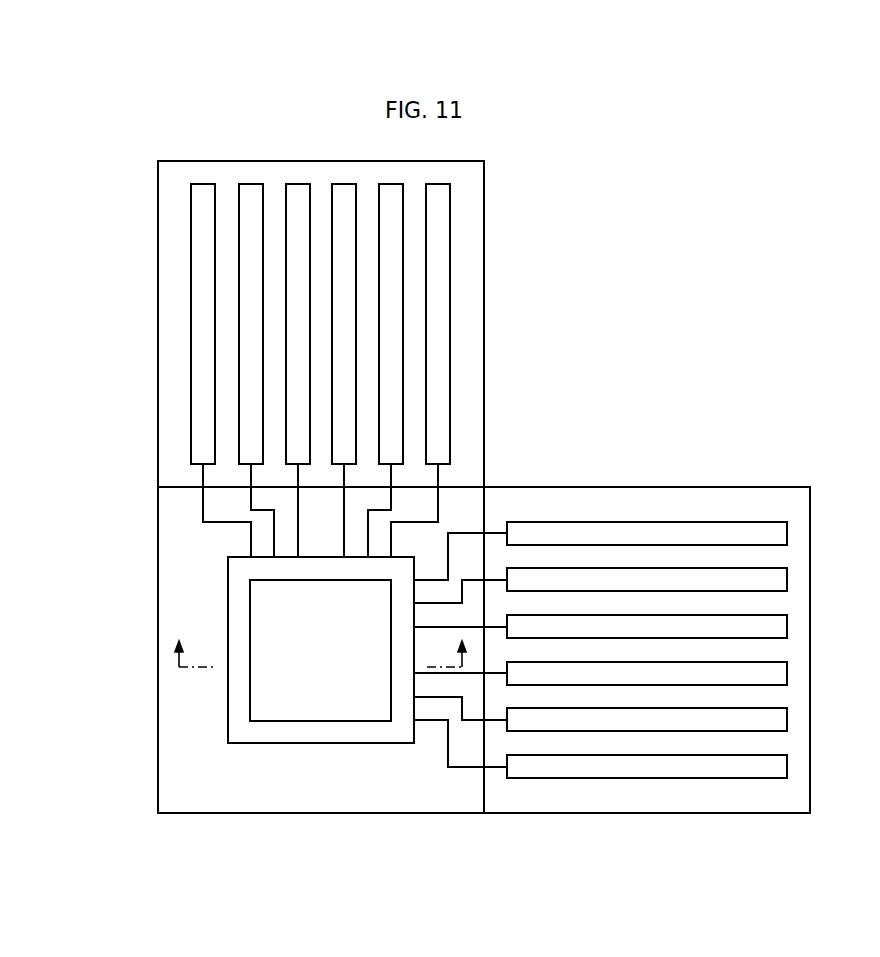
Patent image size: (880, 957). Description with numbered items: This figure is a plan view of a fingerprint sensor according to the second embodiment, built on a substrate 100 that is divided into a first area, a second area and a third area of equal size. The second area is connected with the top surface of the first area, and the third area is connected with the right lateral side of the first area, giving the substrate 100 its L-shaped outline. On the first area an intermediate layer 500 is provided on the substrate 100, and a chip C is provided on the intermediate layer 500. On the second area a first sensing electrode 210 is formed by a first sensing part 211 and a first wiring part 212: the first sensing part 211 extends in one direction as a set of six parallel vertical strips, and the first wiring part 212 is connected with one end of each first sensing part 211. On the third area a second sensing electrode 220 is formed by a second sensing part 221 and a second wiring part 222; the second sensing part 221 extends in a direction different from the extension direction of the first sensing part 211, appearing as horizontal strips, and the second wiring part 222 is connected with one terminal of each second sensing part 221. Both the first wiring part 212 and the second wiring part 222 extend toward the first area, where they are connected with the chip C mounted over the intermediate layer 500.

The substrate 100 is at (158, 647).
The first sensing electrode 210 is at (243, 370).
The first sensing part 211 is at (203, 373).
The first wiring part 212 is at (203, 473).
The second sensing electrode 220 is at (600, 720).
The second sensing part 221 is at (629, 778).
The second wiring part 222 is at (497, 767).
The intermediate layer 500 is at (293, 743).
The chip C is at (361, 721).